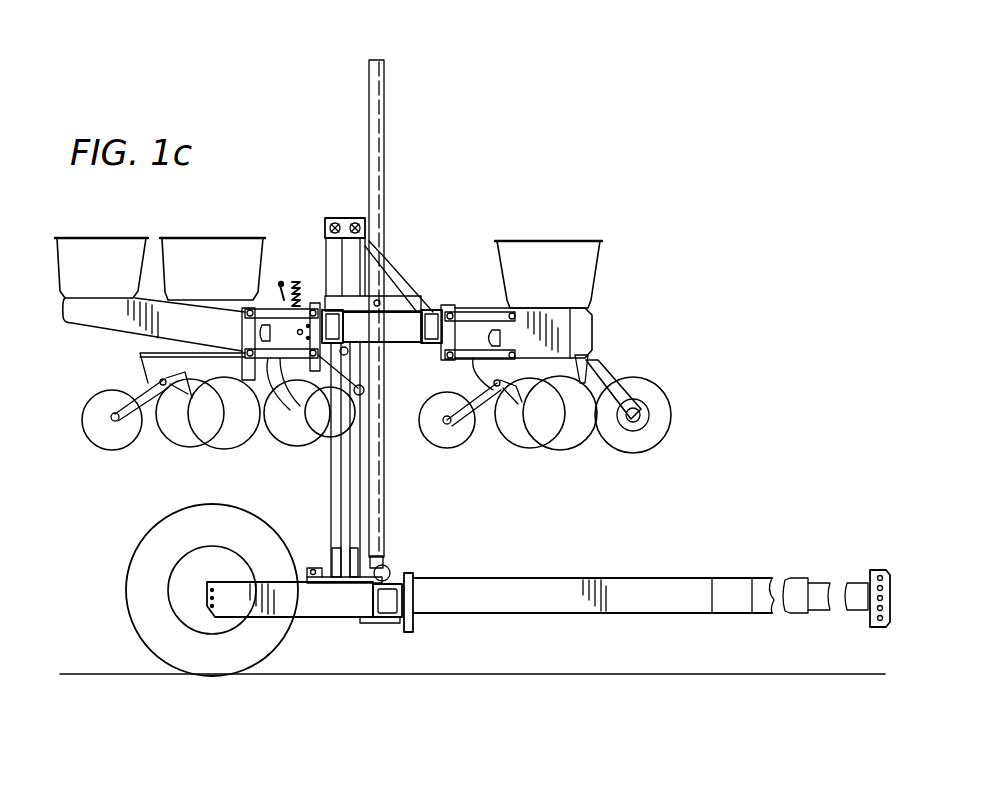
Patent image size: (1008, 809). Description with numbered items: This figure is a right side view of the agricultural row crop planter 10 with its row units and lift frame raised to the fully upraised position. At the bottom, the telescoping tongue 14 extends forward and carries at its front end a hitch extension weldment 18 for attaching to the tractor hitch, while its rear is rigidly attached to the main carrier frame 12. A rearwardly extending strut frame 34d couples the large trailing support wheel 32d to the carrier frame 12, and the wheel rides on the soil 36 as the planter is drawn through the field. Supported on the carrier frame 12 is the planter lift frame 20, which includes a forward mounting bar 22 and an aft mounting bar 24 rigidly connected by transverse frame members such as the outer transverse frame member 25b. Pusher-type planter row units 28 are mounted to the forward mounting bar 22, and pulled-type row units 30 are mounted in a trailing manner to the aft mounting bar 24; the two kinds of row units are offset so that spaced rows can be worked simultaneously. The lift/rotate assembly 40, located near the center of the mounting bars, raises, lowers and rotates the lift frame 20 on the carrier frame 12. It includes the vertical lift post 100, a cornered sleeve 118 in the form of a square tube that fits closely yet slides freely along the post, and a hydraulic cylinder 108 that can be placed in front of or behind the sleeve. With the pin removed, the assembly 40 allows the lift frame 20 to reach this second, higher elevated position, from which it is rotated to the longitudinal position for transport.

The agricultural row crop planter 10 is at (579, 168).
The main carrier frame 12 is at (388, 605).
The telescoping tongue 14 is at (733, 570).
The hitch extension weldment 18 is at (875, 570).
The planter lift frame 20 is at (410, 270).
The forward mounting bar 22 is at (441, 308).
The aft mounting bar 24 is at (326, 314).
The outer transverse frame member 25b is at (394, 330).
The pusher-type planter row unit 28 is at (606, 306).
The pulled-type row unit 30 is at (92, 340).
The support wheel 32d is at (133, 600).
The strut frame 34d is at (312, 607).
The soil 36 is at (690, 674).
The lift/rotate assembly 40 is at (422, 532).
The vertical lift post 100 is at (333, 530).
The hydraulic cylinder 108 is at (380, 97).
The cornered sleeve 118 is at (329, 222).